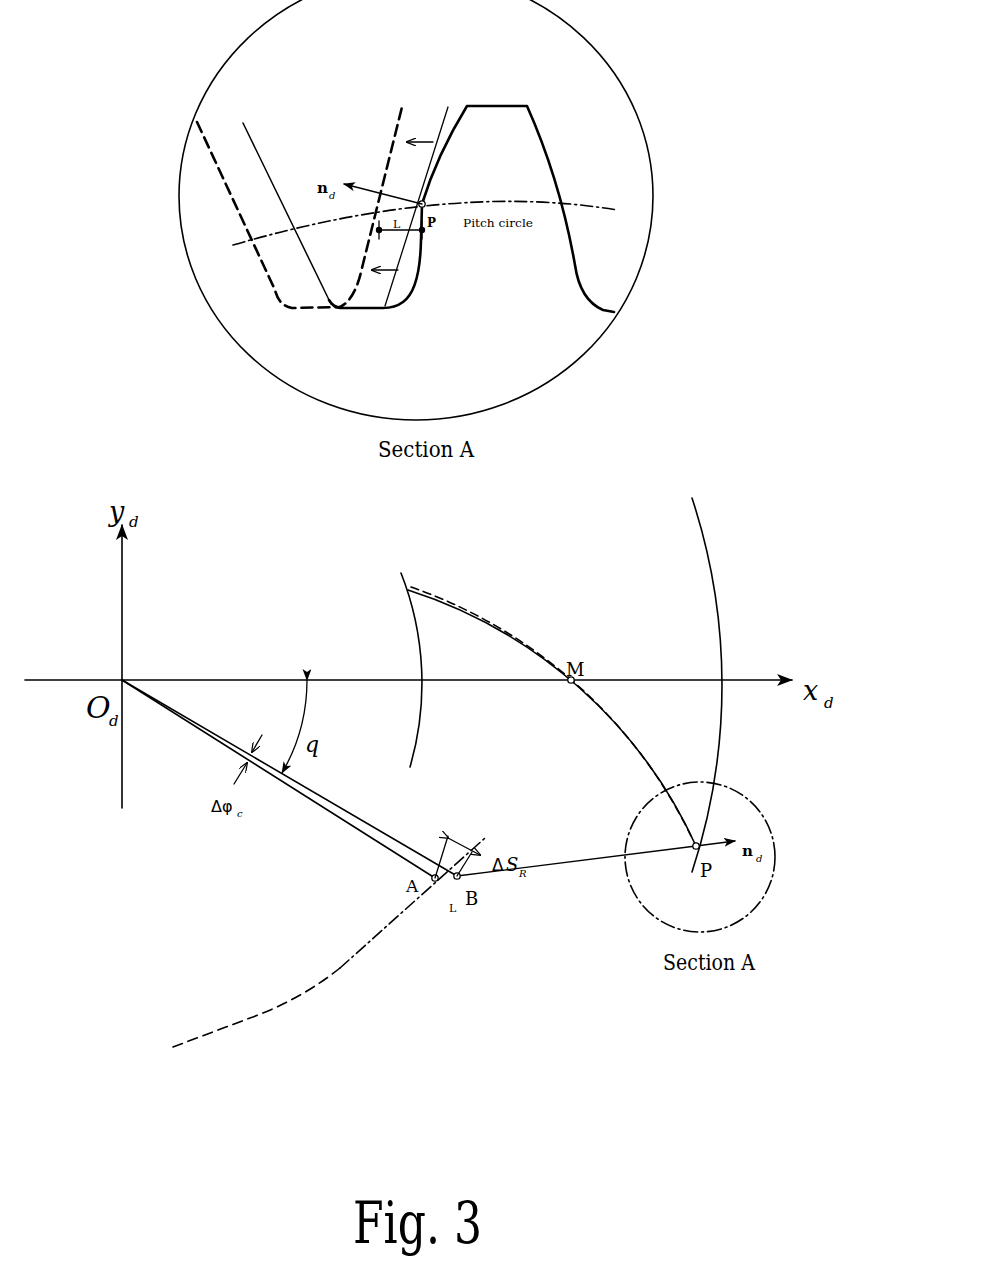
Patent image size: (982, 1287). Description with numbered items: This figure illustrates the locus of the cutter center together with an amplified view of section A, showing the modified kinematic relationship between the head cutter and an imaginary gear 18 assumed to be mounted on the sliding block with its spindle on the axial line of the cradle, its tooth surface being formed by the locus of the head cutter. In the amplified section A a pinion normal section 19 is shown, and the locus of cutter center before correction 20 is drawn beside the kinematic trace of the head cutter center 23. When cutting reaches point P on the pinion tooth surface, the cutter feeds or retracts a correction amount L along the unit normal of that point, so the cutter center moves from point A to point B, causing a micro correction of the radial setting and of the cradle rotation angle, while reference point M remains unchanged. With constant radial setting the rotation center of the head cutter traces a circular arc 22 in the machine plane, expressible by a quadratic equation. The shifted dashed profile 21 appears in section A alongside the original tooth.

The imaginary gear 18 is at (703, 535).
The pinion normal section 19 is at (540, 148).
The locus of cutter center before correction 20 is at (259, 148).
The shifted (corrected) tooth profile 21 is at (209, 152).
The circular arc 22 is at (417, 898).
The kinematic trace of the head cutter center 23 is at (435, 903).